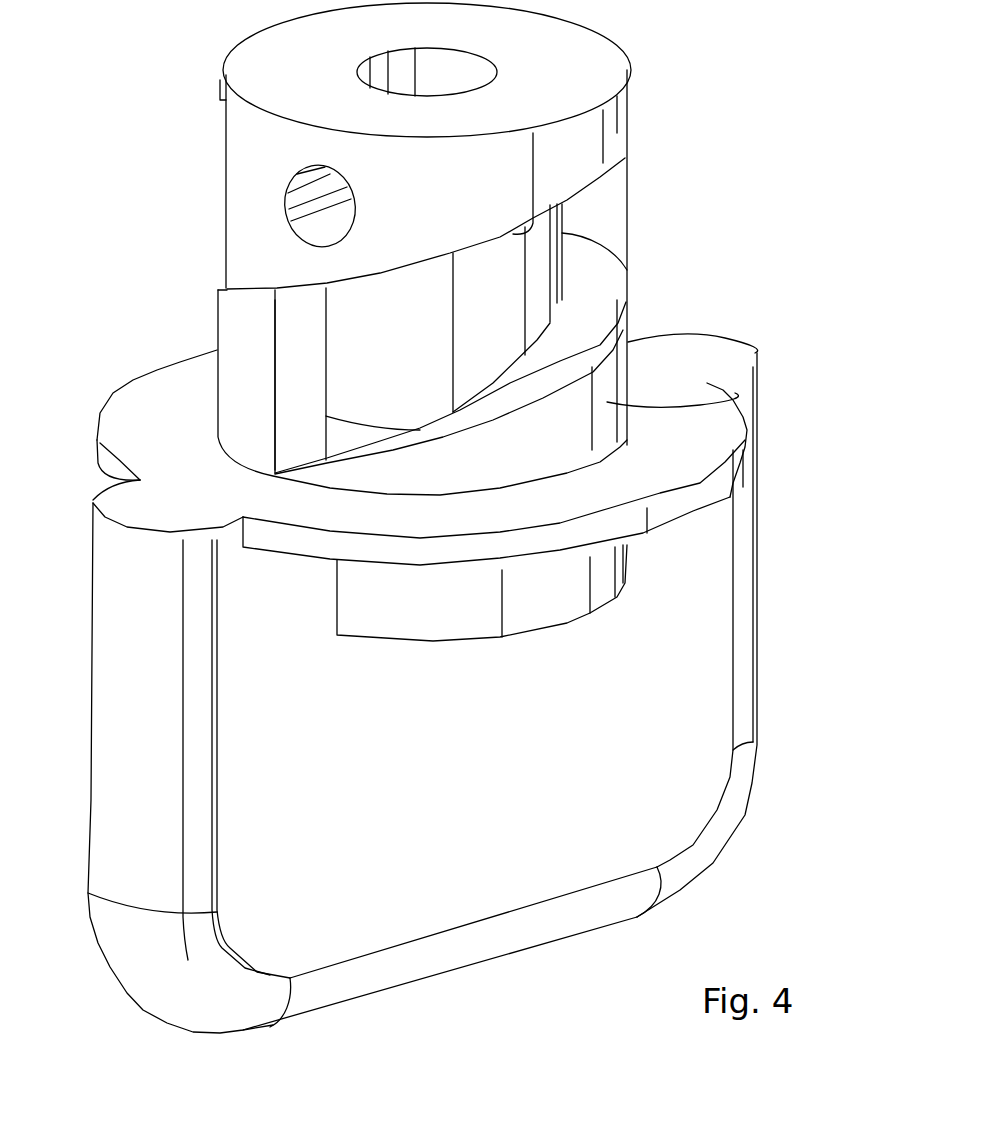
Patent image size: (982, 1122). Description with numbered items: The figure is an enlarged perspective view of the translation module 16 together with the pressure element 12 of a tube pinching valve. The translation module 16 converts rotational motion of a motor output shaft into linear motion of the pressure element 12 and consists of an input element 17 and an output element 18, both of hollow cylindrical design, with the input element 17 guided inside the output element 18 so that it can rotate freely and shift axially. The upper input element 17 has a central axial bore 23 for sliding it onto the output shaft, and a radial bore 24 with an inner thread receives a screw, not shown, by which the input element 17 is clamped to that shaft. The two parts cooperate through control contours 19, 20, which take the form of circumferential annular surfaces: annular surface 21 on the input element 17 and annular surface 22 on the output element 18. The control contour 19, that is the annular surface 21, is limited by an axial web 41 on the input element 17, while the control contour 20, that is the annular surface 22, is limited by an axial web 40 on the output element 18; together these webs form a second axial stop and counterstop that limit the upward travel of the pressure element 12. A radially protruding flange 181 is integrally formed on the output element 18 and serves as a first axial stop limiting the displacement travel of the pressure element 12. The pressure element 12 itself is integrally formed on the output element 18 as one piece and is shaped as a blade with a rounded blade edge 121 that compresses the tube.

The pressure element 12 is at (394, 890).
The rounded blade edge 121 is at (523, 932).
The translation module 16 is at (655, 287).
The input element 17 is at (253, 83).
The output element 18 is at (715, 394).
The flange 181 is at (700, 448).
The control contour 19 is at (380, 279).
The control contour 20 is at (586, 321).
The annular surface 21 is at (567, 218).
The annular surface 22 is at (600, 282).
The central axial bore 23 is at (397, 67).
The radial bore 24 is at (295, 200).
The axial web 40 is at (296, 373).
The axial web 41 is at (610, 226).